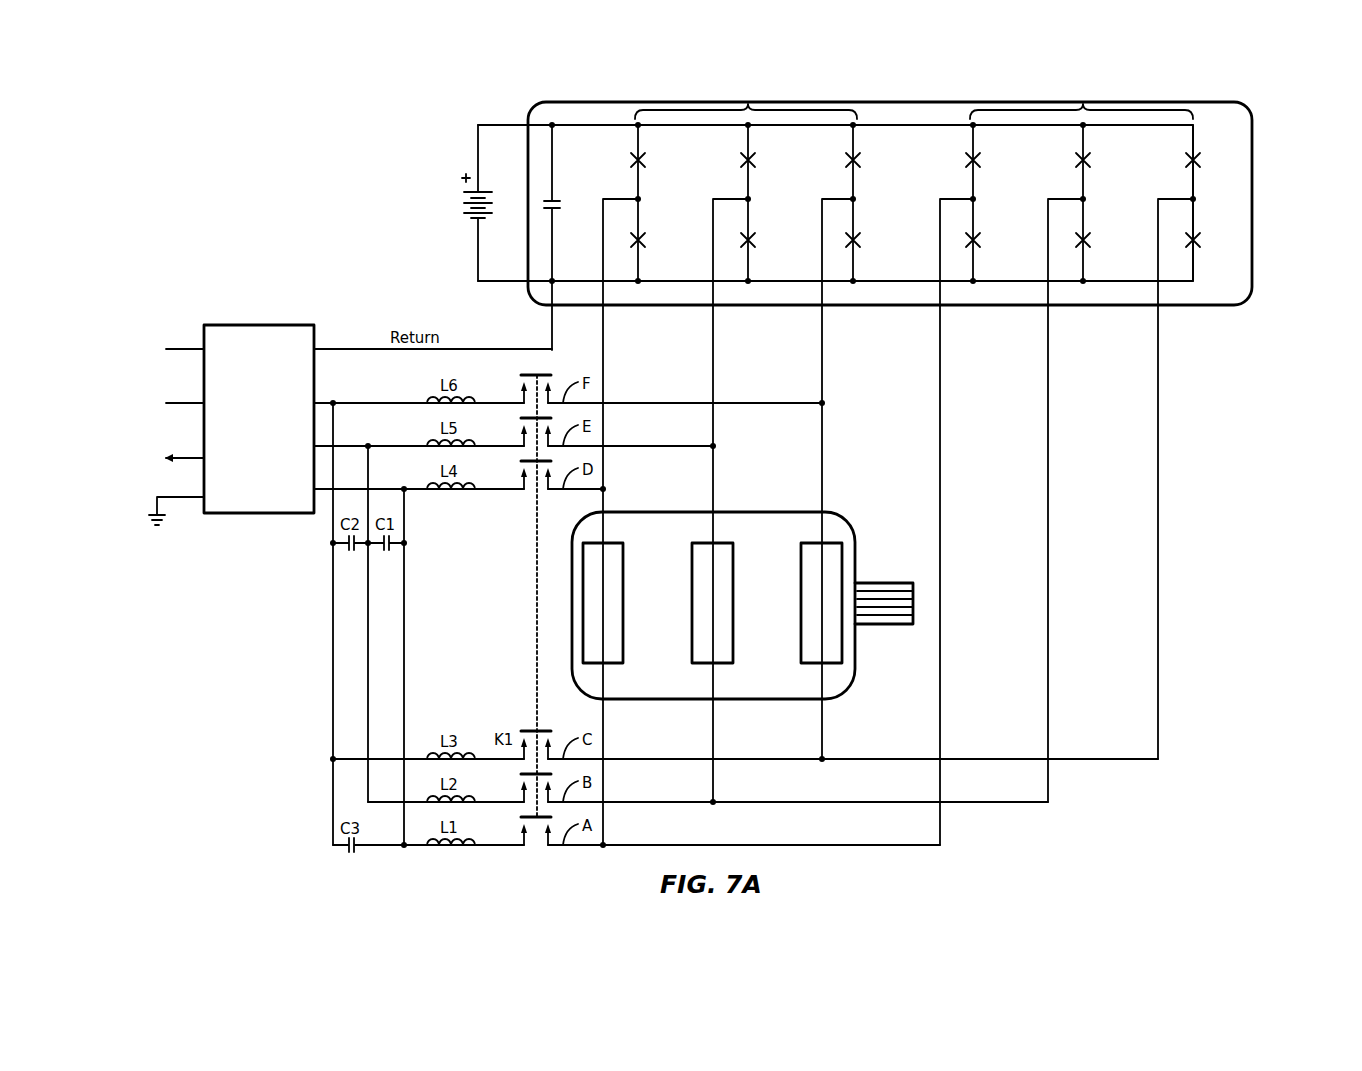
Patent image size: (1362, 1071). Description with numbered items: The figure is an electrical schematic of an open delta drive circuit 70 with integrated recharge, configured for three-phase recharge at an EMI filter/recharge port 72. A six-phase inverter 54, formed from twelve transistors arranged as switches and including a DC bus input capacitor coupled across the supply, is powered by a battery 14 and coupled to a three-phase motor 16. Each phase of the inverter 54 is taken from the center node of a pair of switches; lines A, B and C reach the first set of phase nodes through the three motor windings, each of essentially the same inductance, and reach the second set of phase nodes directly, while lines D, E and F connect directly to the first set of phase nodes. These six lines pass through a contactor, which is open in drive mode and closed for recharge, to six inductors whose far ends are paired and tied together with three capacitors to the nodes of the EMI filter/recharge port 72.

The battery 14 is at (462, 176).
The three-phase motor 16 is at (856, 562).
The six-phase inverter 54 is at (1253, 204).
The open delta drive circuit 70 is at (1297, 118).
The EMI filter/recharge port 72 is at (114, 502).